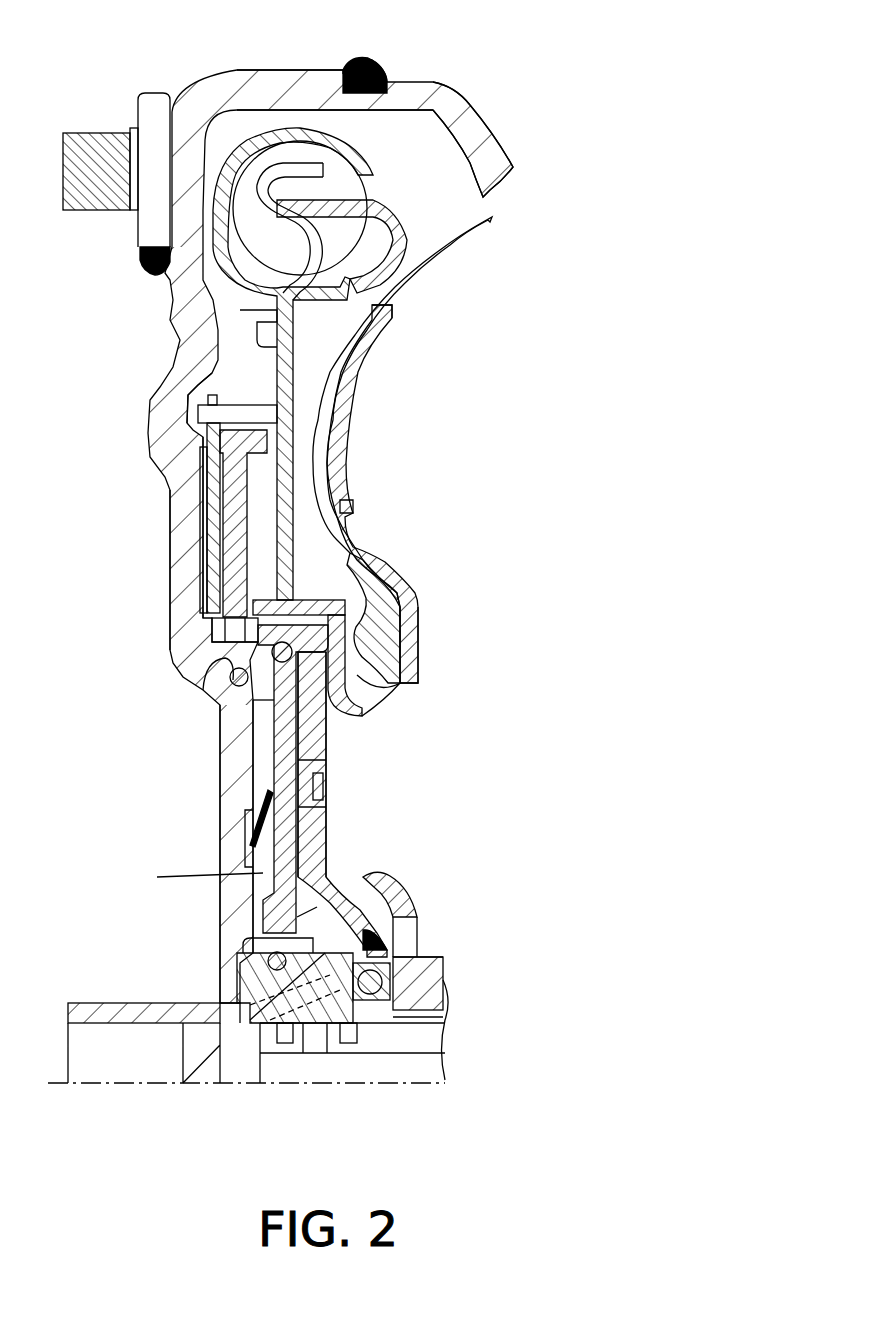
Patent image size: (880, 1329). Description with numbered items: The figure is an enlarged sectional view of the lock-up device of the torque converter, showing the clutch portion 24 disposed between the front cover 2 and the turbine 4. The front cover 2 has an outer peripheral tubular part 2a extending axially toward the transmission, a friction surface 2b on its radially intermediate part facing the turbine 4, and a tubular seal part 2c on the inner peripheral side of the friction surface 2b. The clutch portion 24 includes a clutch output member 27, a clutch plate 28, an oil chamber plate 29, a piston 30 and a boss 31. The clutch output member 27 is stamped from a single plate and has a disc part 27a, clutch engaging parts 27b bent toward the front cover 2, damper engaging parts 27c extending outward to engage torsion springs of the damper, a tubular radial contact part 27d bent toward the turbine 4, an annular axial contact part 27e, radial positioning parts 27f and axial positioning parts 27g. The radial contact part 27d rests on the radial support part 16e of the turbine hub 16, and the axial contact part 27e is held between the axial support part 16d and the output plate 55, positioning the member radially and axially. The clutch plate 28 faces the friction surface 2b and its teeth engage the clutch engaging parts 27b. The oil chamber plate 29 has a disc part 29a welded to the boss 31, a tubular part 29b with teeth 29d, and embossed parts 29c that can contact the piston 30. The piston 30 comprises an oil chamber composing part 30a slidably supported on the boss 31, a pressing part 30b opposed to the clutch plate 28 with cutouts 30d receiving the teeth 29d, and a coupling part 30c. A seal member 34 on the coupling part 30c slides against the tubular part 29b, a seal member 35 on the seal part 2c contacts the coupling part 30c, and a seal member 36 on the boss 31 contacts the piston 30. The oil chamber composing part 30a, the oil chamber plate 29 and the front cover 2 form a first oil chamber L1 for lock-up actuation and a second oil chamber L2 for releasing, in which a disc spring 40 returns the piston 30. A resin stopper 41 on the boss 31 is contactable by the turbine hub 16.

The front cover 2 is at (166, 342).
The outer peripheral tubular part 2a is at (273, 85).
The friction surface 2b is at (167, 480).
The tubular seal part 2c is at (203, 693).
The turbine 4 is at (475, 247).
The turbine hub 16 is at (397, 900).
The axial support part 16d is at (377, 610).
The radial support part 16e is at (352, 555).
The clutch portion 24 is at (180, 495).
The clutch output member 27 is at (296, 440).
The disc part 27a is at (347, 377).
The clutch engaging parts 27b is at (203, 390).
The damper engaging parts 27c is at (308, 165).
The radial contact part 27d is at (330, 600).
The axial contact part 27e is at (410, 606).
The radial positioning parts 27f is at (377, 317).
The axial positioning parts 27g is at (240, 310).
The clutch plate 28 is at (203, 443).
The oil chamber plate 29 is at (340, 810).
The disc part 29a is at (322, 750).
The tubular part 29b is at (213, 690).
The embossed parts 29c is at (307, 772).
The teeth 29d is at (207, 640).
The piston 30 is at (304, 713).
The oil chamber composing part 30a is at (247, 800).
The pressing part 30b is at (203, 567).
The coupling part 30c is at (257, 698).
The cutouts 30d is at (212, 628).
The boss 31 is at (243, 992).
The seal member 34 is at (390, 667).
The seal member 35 is at (213, 690).
The seal member 36 is at (247, 940).
The disc spring 40 is at (243, 830).
The stopper 41 is at (420, 992).
The output plate 55 is at (405, 200).
The first oil chamber L1 is at (297, 917).
The second oil chamber L2 is at (201, 887).